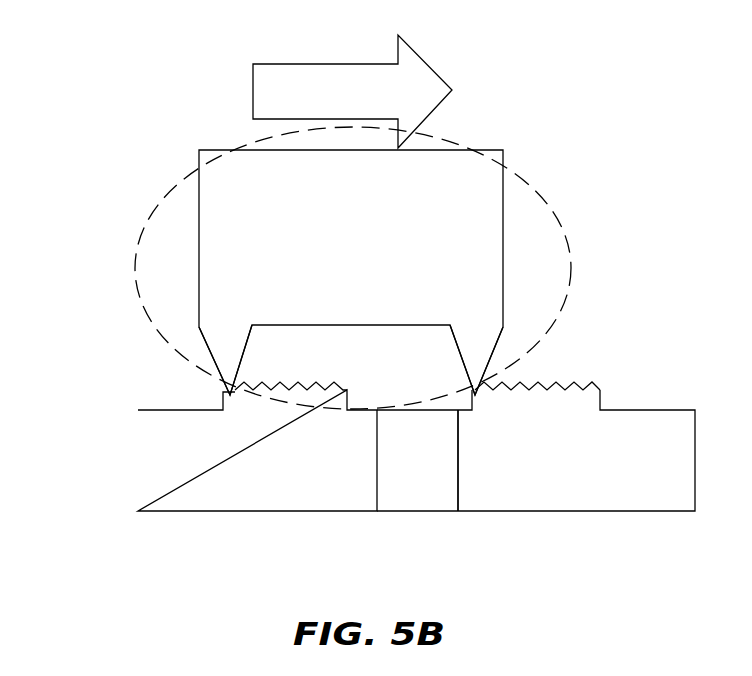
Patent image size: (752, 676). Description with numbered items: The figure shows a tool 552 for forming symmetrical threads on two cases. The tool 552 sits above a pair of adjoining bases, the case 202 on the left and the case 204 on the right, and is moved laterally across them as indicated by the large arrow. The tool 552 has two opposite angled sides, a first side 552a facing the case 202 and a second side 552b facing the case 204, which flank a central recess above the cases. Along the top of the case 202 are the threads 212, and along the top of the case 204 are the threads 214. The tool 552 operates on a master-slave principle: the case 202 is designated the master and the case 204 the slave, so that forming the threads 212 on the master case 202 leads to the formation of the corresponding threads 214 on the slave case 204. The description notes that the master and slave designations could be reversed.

The tool 552 is at (150, 221).
The first angled side of mold block 552a is at (232, 347).
The second angled side of mold block 552b is at (475, 347).
The case 202 is at (238, 510).
The case 204 is at (615, 510).
The threads 212 is at (325, 383).
The threads 214 is at (602, 396).